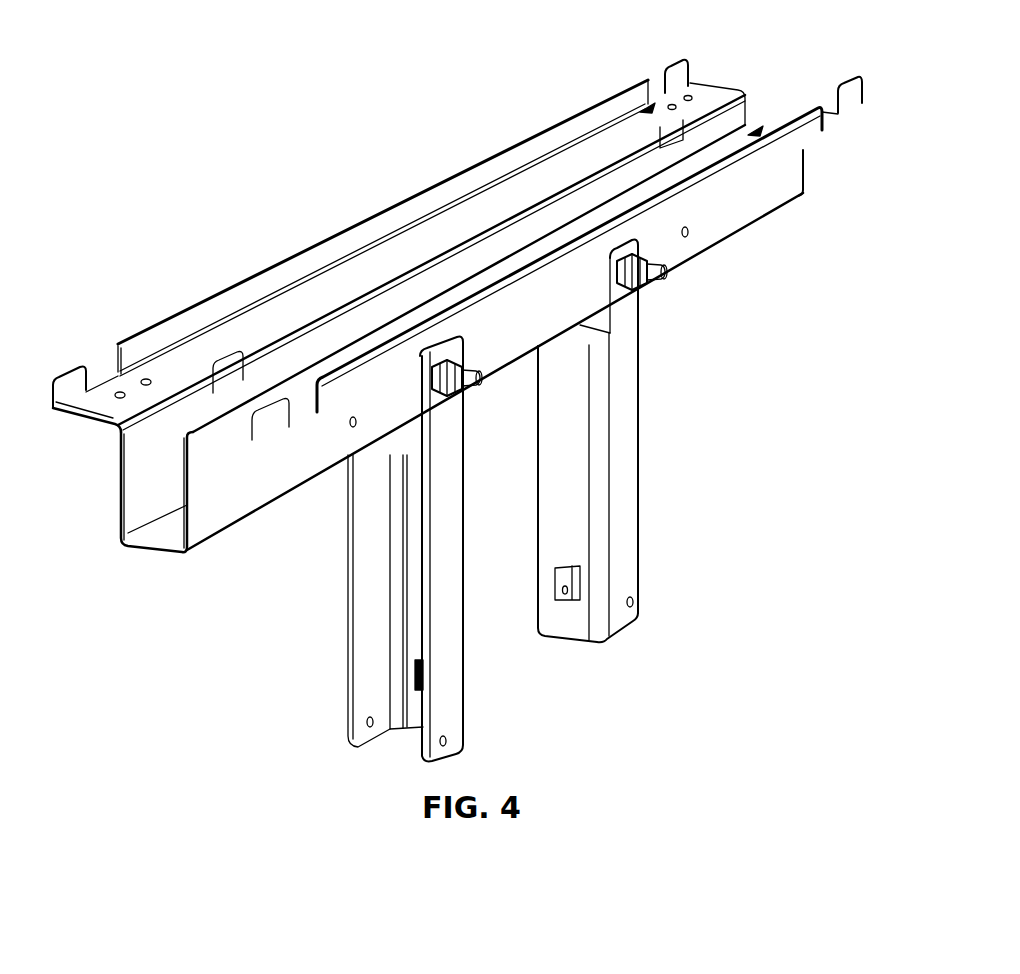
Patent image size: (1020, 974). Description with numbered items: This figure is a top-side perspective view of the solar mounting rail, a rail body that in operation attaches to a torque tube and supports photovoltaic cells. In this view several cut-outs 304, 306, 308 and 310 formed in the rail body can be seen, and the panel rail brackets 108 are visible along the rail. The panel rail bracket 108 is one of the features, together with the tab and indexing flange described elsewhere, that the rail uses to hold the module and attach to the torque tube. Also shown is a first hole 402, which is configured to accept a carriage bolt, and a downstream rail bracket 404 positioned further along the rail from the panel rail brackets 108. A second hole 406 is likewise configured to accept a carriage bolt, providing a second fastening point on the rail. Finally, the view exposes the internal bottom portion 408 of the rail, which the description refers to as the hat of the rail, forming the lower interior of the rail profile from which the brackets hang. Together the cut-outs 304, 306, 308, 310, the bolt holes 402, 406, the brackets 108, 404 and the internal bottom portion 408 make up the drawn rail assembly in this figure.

The panel rail bracket 108 is at (620, 485).
The cut-out 304 is at (305, 405).
The cut-out 306 is at (830, 115).
The cut-out 308 is at (105, 385).
The cut-out 310 is at (657, 93).
The first hole 402 is at (570, 595).
The downstream rail bracket 404 is at (450, 700).
The second hole 406 is at (413, 678).
The internal bottom portion of the rail 408 is at (176, 525).